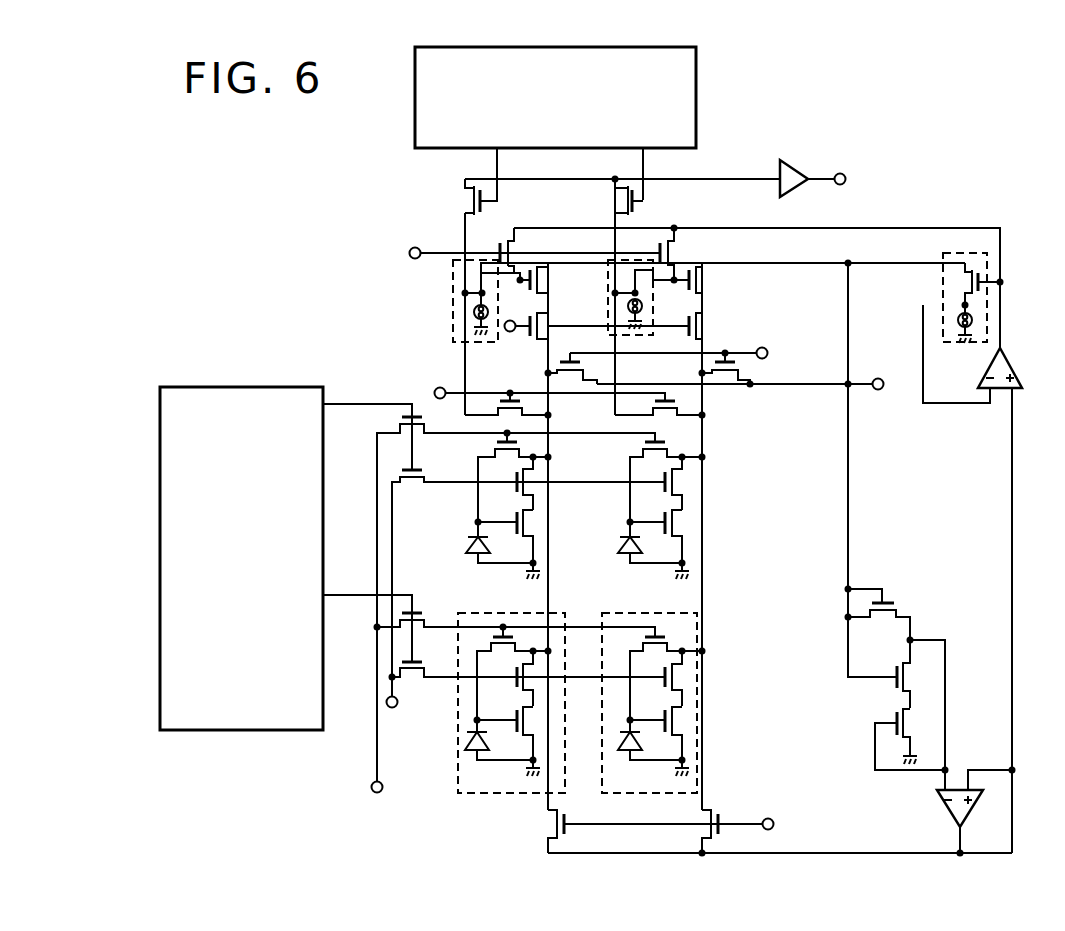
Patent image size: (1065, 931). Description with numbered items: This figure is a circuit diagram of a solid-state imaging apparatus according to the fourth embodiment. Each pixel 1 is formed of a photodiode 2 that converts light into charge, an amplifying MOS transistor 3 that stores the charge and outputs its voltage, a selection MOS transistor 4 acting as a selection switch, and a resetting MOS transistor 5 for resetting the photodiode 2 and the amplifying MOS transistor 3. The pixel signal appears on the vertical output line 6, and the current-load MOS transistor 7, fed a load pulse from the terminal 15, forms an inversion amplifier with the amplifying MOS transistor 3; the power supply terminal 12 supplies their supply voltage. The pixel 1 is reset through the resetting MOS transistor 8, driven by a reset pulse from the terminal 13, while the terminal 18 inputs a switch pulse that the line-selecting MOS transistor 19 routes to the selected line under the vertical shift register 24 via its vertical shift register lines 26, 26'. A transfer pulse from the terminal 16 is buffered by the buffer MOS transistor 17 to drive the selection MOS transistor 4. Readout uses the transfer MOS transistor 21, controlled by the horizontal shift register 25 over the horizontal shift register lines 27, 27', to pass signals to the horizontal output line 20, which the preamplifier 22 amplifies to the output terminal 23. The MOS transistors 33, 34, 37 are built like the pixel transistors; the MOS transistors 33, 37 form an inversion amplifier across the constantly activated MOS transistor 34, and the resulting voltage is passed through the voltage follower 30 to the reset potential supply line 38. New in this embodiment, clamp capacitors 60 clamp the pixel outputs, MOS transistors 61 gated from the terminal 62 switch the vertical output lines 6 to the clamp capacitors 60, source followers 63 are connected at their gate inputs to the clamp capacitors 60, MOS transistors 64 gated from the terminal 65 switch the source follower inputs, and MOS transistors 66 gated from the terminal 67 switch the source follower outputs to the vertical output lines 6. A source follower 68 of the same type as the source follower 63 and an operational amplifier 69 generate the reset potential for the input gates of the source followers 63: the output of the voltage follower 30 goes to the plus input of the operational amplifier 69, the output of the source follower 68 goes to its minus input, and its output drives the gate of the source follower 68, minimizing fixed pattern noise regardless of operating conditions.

The pixel 1 is at (562, 684).
The photodiode 2 is at (466, 744).
The amplifying MOS transistor 3 is at (515, 718).
The selection MOS transistor 4 is at (513, 672).
The resetting MOS transistor 5 is at (490, 642).
The vertical output line 6 is at (552, 536).
The current-load MOS transistor 7 is at (588, 365).
The resetting MOS transistor 8 is at (556, 827).
The power supply terminal 12 is at (882, 378).
The terminal 13 is at (774, 824).
The terminal 15 is at (768, 350).
The terminal 16 is at (394, 708).
The buffer MOS transistor 17 is at (424, 483).
The terminal 18 is at (379, 793).
The line-selecting MOS transistor 19 is at (430, 612).
The horizontal output line 20 is at (757, 176).
The transfer MOS transistor 21 is at (462, 196).
The preamplifier 22 is at (800, 164).
The output terminal 23 is at (846, 177).
The vertical shift register 24 is at (290, 386).
The horizontal shift register 25 is at (700, 95).
The vertical shift register line 26 is at (396, 384).
The vertical shift register line 26' is at (349, 569).
The horizontal shift register line 27 is at (432, 163).
The horizontal shift register line 27' is at (696, 157).
The voltage follower 30 is at (948, 812).
The MOS transistor 33 is at (895, 718).
The MOS transistor 34 is at (895, 672).
The MOS transistor 37 is at (898, 603).
The reset potential supply line 38 is at (858, 851).
The clamp capacitor 60 is at (541, 276).
The MOS transistor 61 is at (544, 328).
The terminal 62 is at (511, 332).
The source follower 63 is at (450, 305).
The MOS transistor 64 is at (512, 240).
The terminal 65 is at (412, 248).
The MOS transistor 66 is at (497, 406).
The terminal 67 is at (440, 387).
The source follower 68 is at (942, 283).
The operational amplifier 69 is at (984, 380).